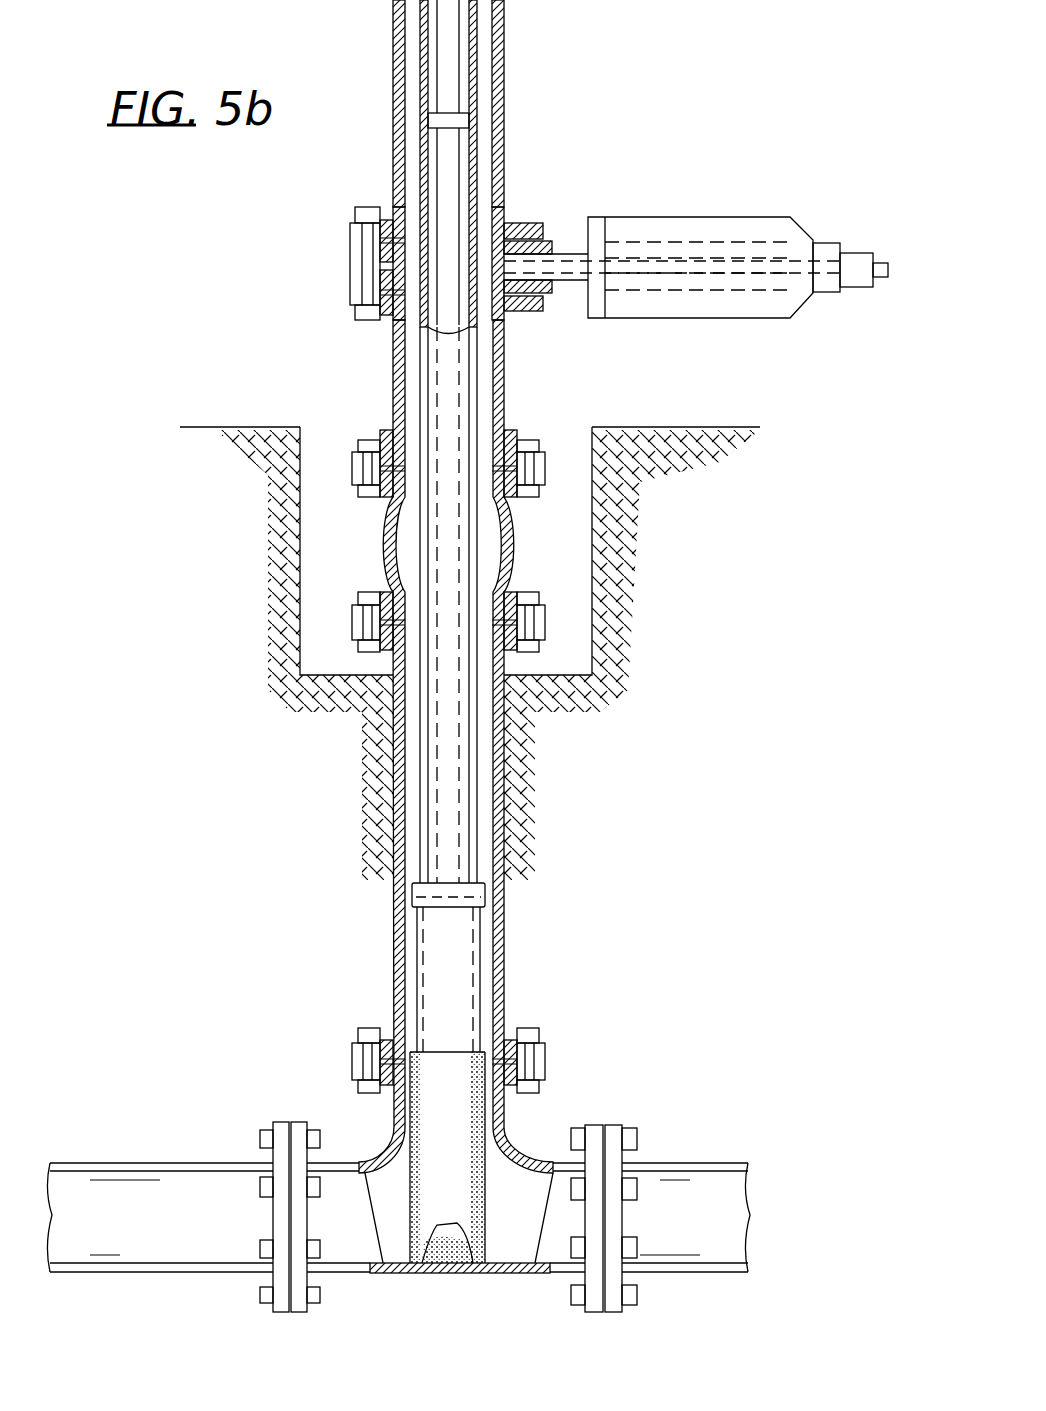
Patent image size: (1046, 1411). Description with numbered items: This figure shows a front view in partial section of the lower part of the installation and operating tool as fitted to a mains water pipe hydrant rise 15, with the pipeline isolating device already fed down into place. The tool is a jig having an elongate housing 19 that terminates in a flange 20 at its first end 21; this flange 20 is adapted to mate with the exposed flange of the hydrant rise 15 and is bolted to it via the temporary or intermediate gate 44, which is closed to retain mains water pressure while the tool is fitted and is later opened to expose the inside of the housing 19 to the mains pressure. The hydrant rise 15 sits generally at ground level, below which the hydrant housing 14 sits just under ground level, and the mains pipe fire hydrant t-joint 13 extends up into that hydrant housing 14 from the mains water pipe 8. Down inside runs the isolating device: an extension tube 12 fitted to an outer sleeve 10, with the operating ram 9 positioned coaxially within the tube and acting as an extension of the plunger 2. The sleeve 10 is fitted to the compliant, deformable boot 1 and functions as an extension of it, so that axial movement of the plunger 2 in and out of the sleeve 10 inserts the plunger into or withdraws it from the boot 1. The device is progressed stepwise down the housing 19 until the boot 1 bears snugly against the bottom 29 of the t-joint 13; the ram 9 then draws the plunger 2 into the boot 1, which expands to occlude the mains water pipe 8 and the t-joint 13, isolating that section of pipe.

The boot 1 is at (443, 1167).
The plunger 2 is at (440, 1003).
The mains water pipe 8 is at (163, 1178).
The operating ram 9 is at (452, 165).
The outer sleeve 10 is at (433, 922).
The extension tube 12 is at (472, 90).
The t-joint 13 is at (507, 1130).
The hydrant housing 14 is at (380, 534).
The hydrant rise 15 is at (393, 378).
The elongate housing 19 is at (500, 40).
The flange 20 is at (350, 233).
The first end 21 is at (504, 205).
The bottom of the t-joint 29 is at (455, 1273).
The intermediate gate 44 is at (546, 279).